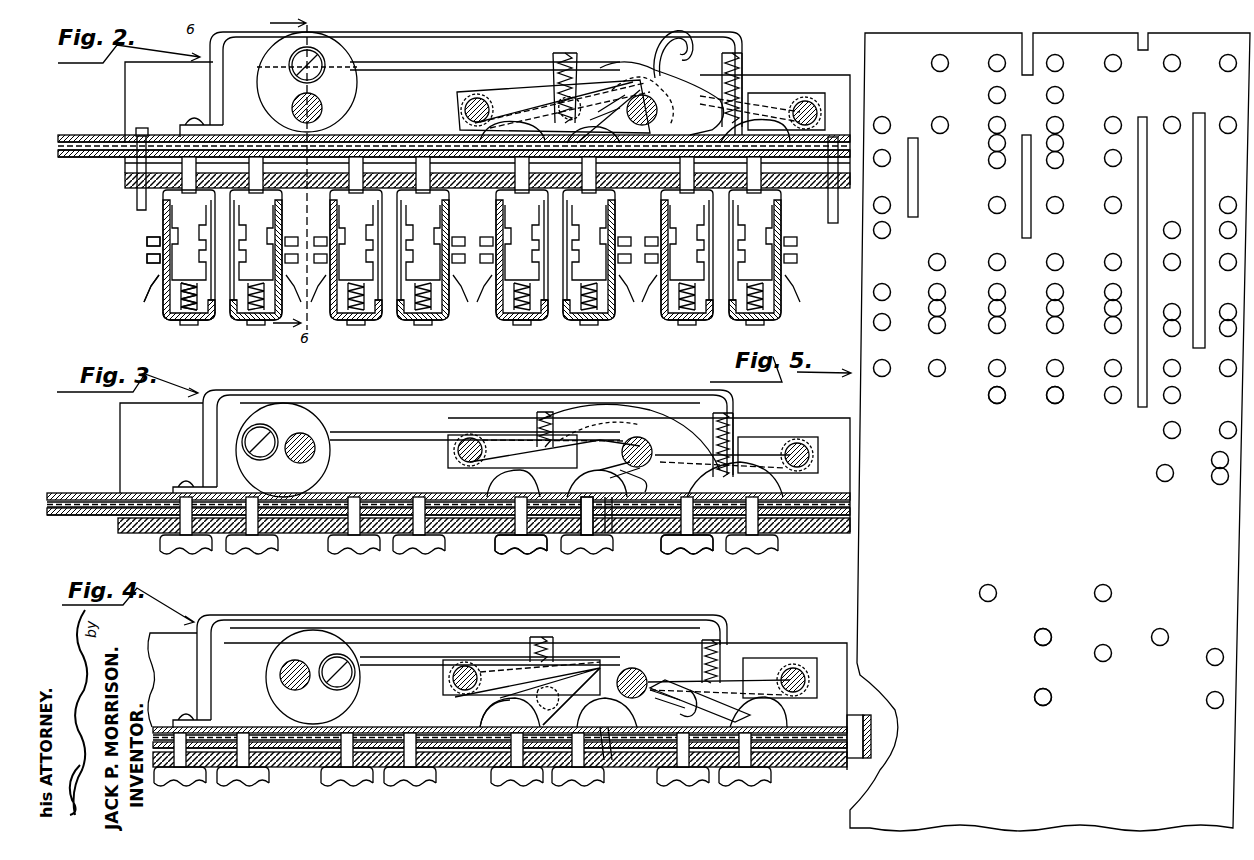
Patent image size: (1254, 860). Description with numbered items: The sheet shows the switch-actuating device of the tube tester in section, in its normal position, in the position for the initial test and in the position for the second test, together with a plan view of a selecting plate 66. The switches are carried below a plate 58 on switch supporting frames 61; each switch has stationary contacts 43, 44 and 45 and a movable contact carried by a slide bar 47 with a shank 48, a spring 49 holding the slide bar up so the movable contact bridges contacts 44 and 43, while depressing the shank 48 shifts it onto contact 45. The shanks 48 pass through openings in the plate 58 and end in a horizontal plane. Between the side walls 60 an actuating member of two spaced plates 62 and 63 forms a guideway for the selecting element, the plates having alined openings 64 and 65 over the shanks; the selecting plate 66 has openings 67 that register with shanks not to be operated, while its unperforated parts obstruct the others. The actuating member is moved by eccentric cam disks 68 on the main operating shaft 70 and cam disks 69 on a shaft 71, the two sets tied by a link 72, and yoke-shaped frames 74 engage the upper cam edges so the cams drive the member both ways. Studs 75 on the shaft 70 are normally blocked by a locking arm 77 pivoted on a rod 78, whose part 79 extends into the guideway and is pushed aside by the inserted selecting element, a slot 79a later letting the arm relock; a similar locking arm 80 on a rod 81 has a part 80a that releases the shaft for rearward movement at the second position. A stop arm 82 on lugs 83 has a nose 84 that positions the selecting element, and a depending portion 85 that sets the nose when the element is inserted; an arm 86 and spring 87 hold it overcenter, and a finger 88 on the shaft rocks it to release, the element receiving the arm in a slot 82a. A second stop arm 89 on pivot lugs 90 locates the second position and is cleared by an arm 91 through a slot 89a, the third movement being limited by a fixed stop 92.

In FIG. 2, the stationary contact 43 is at (147, 259).
In FIG. 2, the stationary contact 44 is at (147, 241).
In FIG. 2, the stationary contact 45 is at (147, 300).
In FIG. 2, the slide bar 47 is at (472, 257).
In FIG. 2, the shank 48 is at (197, 167).
In FIG. 2, the spring 49 is at (189, 286).
In FIG. 2, the plate 58 is at (131, 188).
In FIG. 3, the plate 58 is at (150, 533).
In FIG. 4, the plate 58 is at (378, 785).
In FIG. 2, the side wall 60 is at (125, 94).
In FIG. 3, the side wall 60 is at (120, 454).
In FIG. 4, the side wall 60 is at (150, 636).
In FIG. 2, the switch supporting frame 61 is at (168, 322).
In FIG. 3, the switch supporting frame 61 is at (330, 542).
In FIG. 4, the switch supporting frame 61 is at (325, 777).
In FIG. 2, the plate of actuating member 62 is at (106, 150).
In FIG. 3, the plate of actuating member 62 is at (96, 508).
In FIG. 4, the plate of actuating member 62 is at (160, 770).
In FIG. 2, the upper plate of actuating member 63 is at (100, 129).
In FIG. 3, the upper plate of actuating member 63 is at (80, 494).
In FIG. 4, the upper plate of actuating member 63 is at (165, 727).
In FIG. 2, the opening 64 is at (428, 165).
In FIG. 2, the opening 65 is at (425, 150).
In FIG. 3, the opening 65 is at (414, 508).
In FIG. 4, the opening 65 is at (250, 742).
In FIG. 2, the selecting plate 66 is at (380, 151).
In FIG. 3, the selecting plate 66 is at (118, 516).
In FIG. 4, the selecting plate 66 is at (230, 767).
In FIG. 5, the selecting plate 66 is at (1050, 432).
In FIG. 2, the opening 67 is at (214, 137).
In FIG. 3, the opening 67 is at (330, 493).
In FIG. 5, the opening 67 is at (1048, 404).
In FIG. 2, the eccentric cam disk 68 is at (728, 85).
In FIG. 3, the eccentric cam disk 68 is at (713, 430).
In FIG. 4, the eccentric cam disk 68 is at (705, 645).
In FIG. 2, the eccentric cam disk 69 is at (307, 82).
In FIG. 3, the eccentric cam disk 69 is at (283, 450).
In FIG. 4, the eccentric cam disk 69 is at (313, 677).
In FIG. 2, the main operating shaft 70 is at (643, 125).
In FIG. 3, the main operating shaft 70 is at (645, 452).
In FIG. 4, the main operating shaft 70 is at (628, 668).
In FIG. 2, the shaft 71 is at (293, 102).
In FIG. 3, the shaft 71 is at (300, 457).
In FIG. 4, the shaft 71 is at (295, 686).
In FIG. 2, the link 72 is at (450, 62).
In FIG. 3, the link 72 is at (590, 472).
In FIG. 4, the link 72 is at (490, 653).
In FIG. 2, the yoke-shaped frame 74 is at (210, 94).
In FIG. 3, the yoke-shaped frame 74 is at (420, 390).
In FIG. 4, the yoke-shaped frame 74 is at (388, 615).
In FIG. 2, the stud 75 is at (607, 104).
In FIG. 3, the stud 75 is at (626, 473).
In FIG. 4, the stud 75 is at (660, 690).
In FIG. 2, the locking arm 77 is at (530, 100).
In FIG. 3, the locking arm 77 is at (482, 436).
In FIG. 4, the locking arm 77 is at (500, 665).
In FIG. 2, the rod 78 is at (465, 106).
In FIG. 3, the rod 78 is at (455, 451).
In FIG. 4, the rod 78 is at (450, 684).
In FIG. 2, the downwardly extending part 79 is at (593, 131).
In FIG. 3, the downwardly extending part 79 is at (585, 557).
In FIG. 4, the downwardly extending part 79 is at (571, 696).
In FIG. 5, the slot 79a is at (1213, 230).
In FIG. 2, the locking arm 80 is at (778, 100).
In FIG. 3, the locking arm 80 is at (770, 440).
In FIG. 4, the locking arm 80 is at (774, 668).
In FIG. 2, the part 80a is at (733, 157).
In FIG. 2, the rod 81 is at (818, 113).
In FIG. 3, the rod 81 is at (800, 442).
In FIG. 4, the rod 81 is at (806, 682).
In FIG. 3, the stop arm 82 is at (597, 483).
In FIG. 4, the stop arm 82 is at (607, 712).
In FIG. 5, the slot 82a is at (1147, 207).
In FIG. 3, the lug 83 is at (522, 557).
In FIG. 4, the lug 83 is at (480, 708).
In FIG. 3, the nose 84 is at (614, 500).
In FIG. 4, the nose 84 is at (608, 735).
In FIG. 2, the depending portion 85 is at (512, 131).
In FIG. 3, the depending portion 85 is at (513, 483).
In FIG. 4, the depending portion 85 is at (510, 712).
In FIG. 2, the arm 86 is at (560, 60).
In FIG. 3, the arm 86 is at (543, 412).
In FIG. 4, the arm 86 is at (538, 637).
In FIG. 2, the spring 87 is at (580, 70).
In FIG. 4, the spring 87 is at (553, 690).
In FIG. 2, the finger 88 is at (670, 98).
In FIG. 3, the finger 88 is at (580, 410).
In FIG. 4, the finger 88 is at (655, 700).
In FIG. 2, the stop arm 89 is at (755, 131).
In FIG. 3, the stop arm 89 is at (735, 480).
In FIG. 4, the stop arm 89 is at (758, 712).
In FIG. 5, the slot 89a is at (1031, 184).
In FIG. 3, the pivot lug 90 is at (684, 557).
In FIG. 2, the arm 91 is at (673, 54).
In FIG. 3, the arm 91 is at (633, 483).
In FIG. 4, the arm 91 is at (692, 690).
In FIG. 4, the fixed stop 92 is at (871, 738).